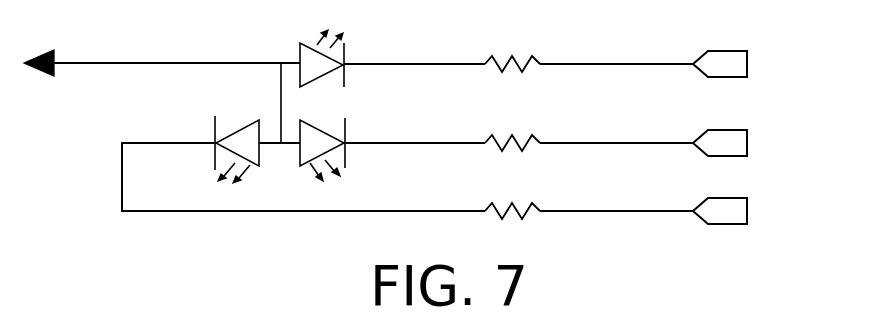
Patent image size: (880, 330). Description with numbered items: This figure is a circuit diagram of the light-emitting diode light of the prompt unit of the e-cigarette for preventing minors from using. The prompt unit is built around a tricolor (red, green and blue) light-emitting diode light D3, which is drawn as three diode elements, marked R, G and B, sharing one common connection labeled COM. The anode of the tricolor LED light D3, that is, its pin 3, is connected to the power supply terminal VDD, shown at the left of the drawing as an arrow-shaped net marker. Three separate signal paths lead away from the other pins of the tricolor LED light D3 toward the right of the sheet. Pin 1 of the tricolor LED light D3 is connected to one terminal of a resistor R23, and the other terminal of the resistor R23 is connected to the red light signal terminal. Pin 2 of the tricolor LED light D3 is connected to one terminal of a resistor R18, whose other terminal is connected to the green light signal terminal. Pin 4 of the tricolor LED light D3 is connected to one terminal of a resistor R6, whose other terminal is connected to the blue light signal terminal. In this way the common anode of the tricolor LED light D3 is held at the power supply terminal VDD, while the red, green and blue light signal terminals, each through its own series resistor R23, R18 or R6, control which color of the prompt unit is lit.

The tricolor light-emitting diode (LED) light D3 is at (230, 106).
The resistor R6 is at (570, 56).
The resistor R18 is at (570, 135).
The resistor R23 is at (570, 203).
The pin 1 is at (303, 165).
The pin 2 is at (415, 132).
The pin 3 is at (233, 92).
The pin 4 is at (414, 53).
The power supply terminal VDD is at (162, 46).
The common net COM is at (256, 55).